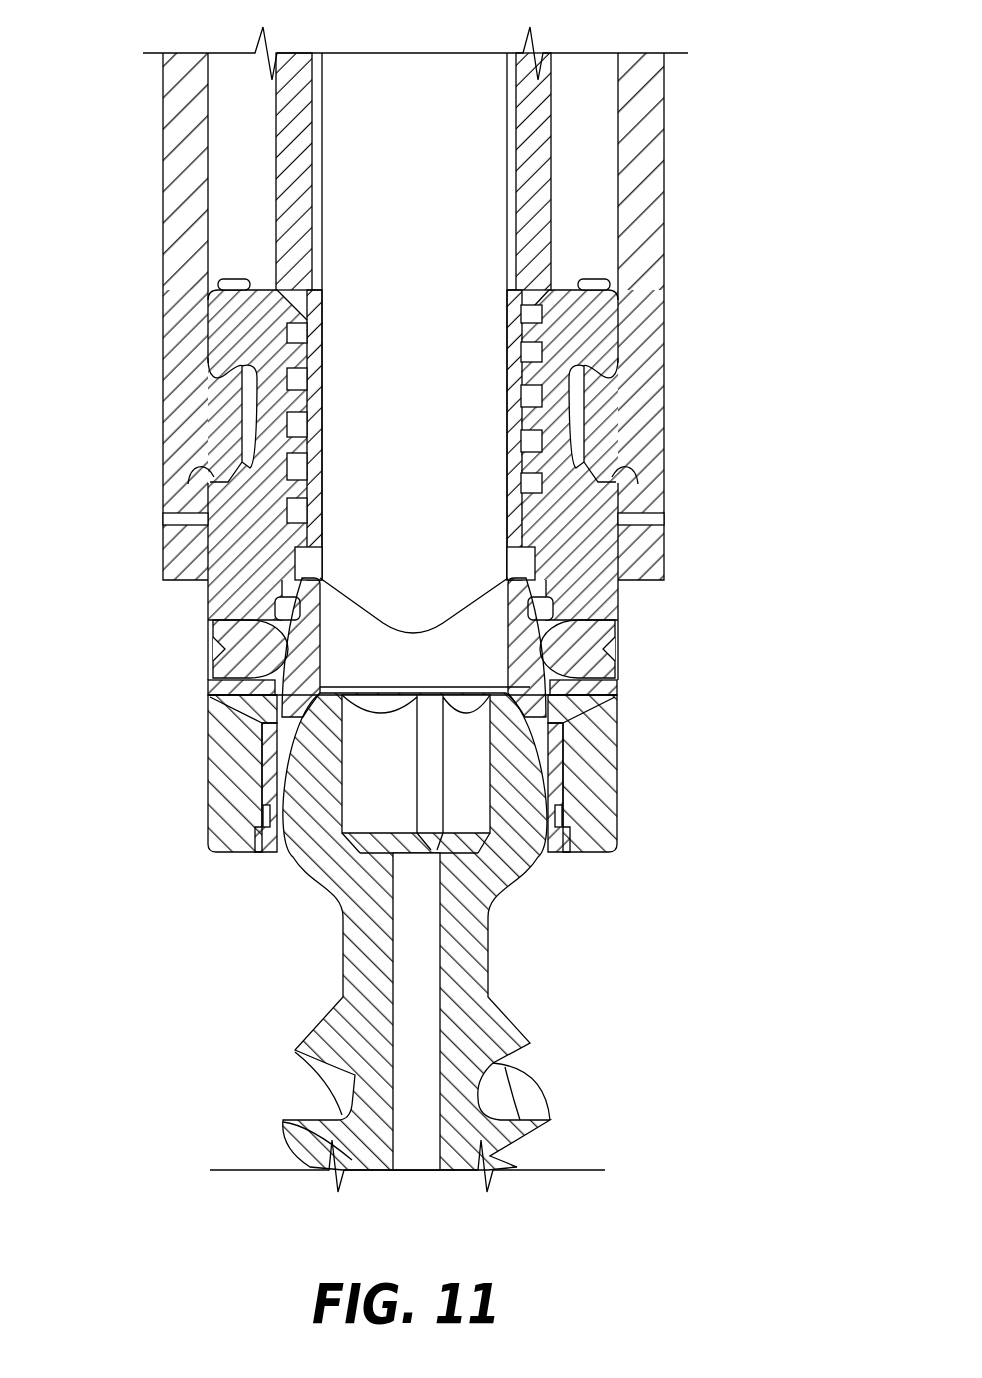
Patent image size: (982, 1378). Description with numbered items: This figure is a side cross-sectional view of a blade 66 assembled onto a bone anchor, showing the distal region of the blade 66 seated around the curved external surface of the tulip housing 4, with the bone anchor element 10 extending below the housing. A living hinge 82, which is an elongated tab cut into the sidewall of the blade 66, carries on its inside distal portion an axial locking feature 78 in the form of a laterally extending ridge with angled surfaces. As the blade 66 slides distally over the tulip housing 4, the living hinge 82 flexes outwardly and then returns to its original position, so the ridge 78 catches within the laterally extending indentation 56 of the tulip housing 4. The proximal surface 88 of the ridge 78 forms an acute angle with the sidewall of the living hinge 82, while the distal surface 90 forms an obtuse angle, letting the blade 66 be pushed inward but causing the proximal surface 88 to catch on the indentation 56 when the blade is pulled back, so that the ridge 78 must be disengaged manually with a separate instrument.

The blade 66 is at (722, 128).
The living hinge 82 is at (201, 205).
The axial locking feature 78 is at (214, 435).
The laterally extending indentation 56 is at (254, 382).
The proximal surface 88 is at (210, 388).
The distal surface 90 is at (207, 467).
The tulip housing 4 is at (142, 746).
The threaded insert 10 is at (592, 1000).